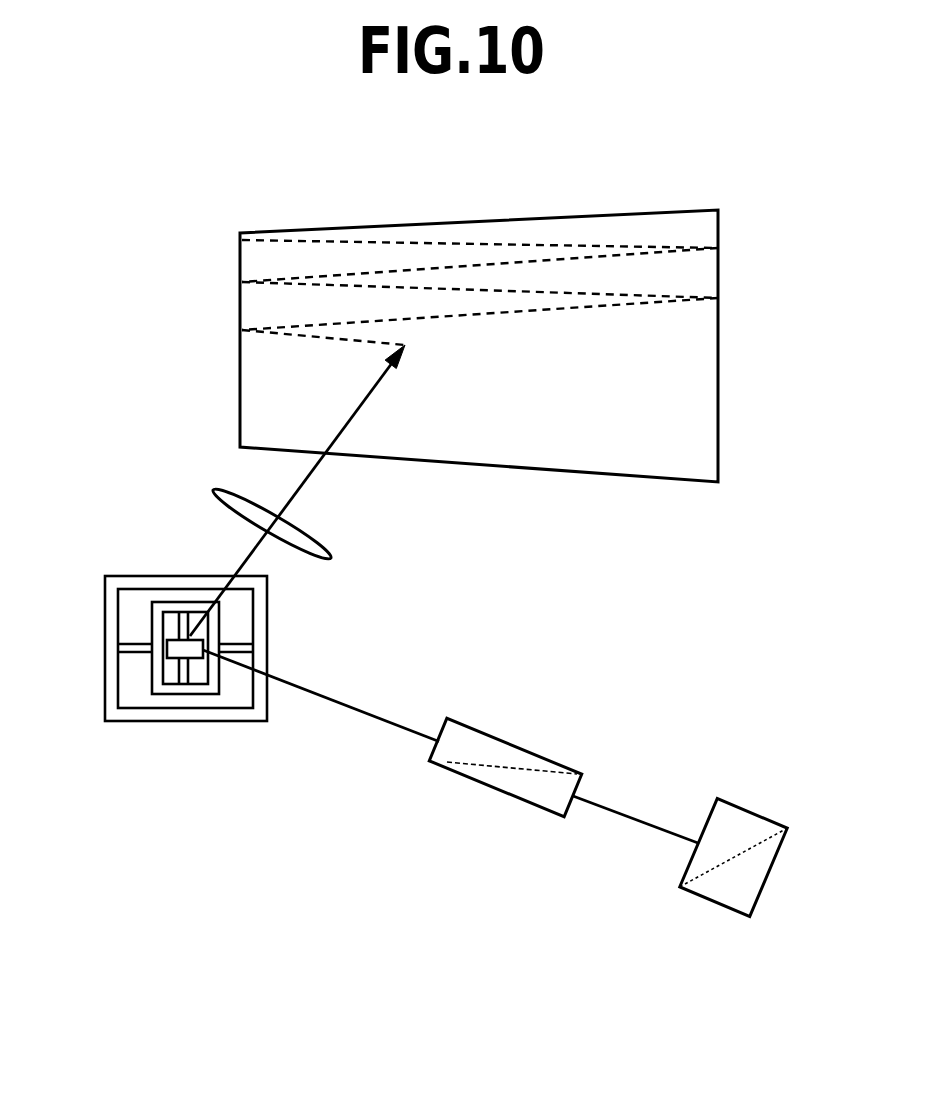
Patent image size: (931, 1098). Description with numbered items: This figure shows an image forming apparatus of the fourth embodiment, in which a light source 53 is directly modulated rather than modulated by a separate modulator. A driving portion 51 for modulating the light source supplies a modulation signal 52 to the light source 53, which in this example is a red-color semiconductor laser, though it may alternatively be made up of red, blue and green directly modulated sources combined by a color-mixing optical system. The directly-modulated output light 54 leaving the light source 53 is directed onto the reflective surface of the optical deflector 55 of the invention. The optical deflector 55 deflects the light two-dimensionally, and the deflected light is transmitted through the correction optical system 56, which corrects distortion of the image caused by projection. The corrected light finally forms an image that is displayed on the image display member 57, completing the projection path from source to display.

The driving portion 51 is at (752, 810).
The modulation signal 52 is at (628, 812).
The light source 53 is at (512, 745).
The directly-modulated output light 54 is at (343, 703).
The optical deflector 55 is at (152, 575).
The correction optical system 56 is at (322, 542).
The image display member 57 is at (720, 397).